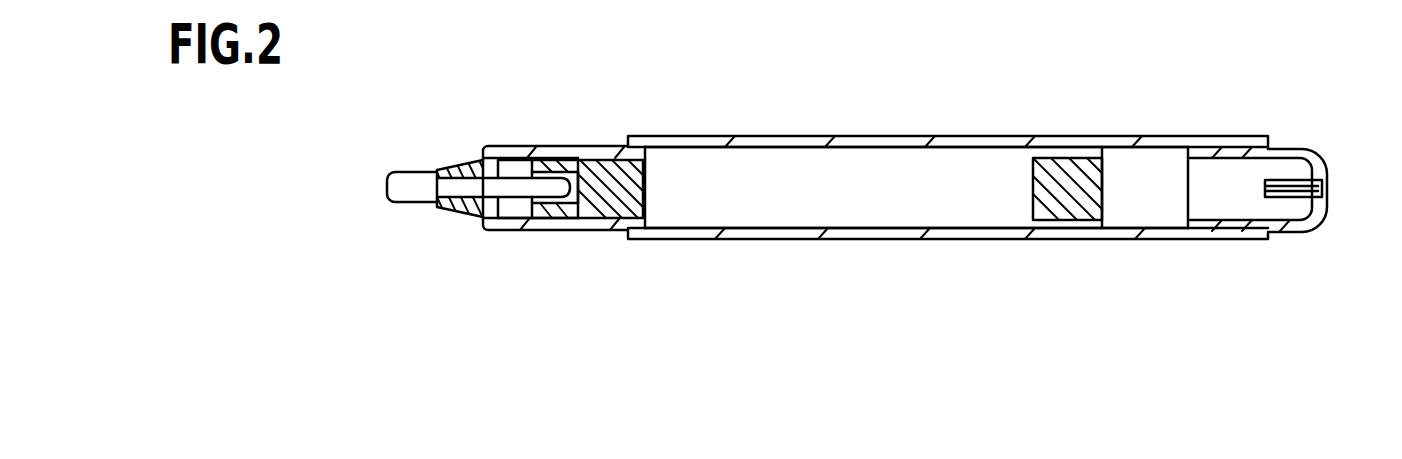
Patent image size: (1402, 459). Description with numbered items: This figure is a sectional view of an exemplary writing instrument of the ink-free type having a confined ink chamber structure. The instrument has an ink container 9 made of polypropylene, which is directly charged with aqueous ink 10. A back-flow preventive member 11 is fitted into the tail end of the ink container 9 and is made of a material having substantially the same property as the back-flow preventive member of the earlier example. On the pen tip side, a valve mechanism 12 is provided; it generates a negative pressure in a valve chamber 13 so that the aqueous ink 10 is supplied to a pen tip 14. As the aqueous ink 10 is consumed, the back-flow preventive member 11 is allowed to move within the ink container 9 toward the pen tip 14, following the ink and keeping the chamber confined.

The ink container 9 is at (843, 137).
The aqueous ink 10 is at (937, 165).
The back-flow preventive member 11 is at (1080, 180).
The valve mechanism 12 is at (590, 167).
The valve chamber 13 is at (508, 210).
The pen tip 14 is at (398, 181).